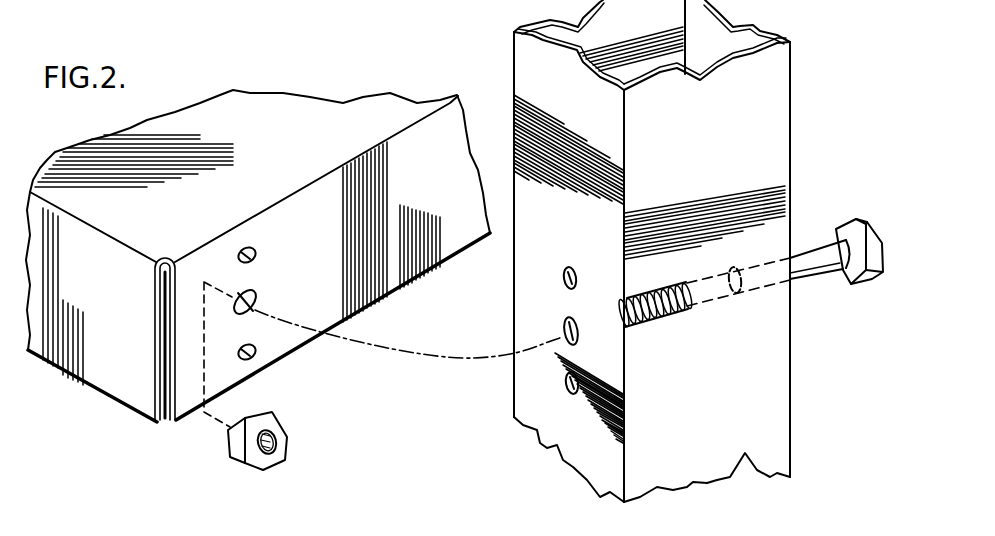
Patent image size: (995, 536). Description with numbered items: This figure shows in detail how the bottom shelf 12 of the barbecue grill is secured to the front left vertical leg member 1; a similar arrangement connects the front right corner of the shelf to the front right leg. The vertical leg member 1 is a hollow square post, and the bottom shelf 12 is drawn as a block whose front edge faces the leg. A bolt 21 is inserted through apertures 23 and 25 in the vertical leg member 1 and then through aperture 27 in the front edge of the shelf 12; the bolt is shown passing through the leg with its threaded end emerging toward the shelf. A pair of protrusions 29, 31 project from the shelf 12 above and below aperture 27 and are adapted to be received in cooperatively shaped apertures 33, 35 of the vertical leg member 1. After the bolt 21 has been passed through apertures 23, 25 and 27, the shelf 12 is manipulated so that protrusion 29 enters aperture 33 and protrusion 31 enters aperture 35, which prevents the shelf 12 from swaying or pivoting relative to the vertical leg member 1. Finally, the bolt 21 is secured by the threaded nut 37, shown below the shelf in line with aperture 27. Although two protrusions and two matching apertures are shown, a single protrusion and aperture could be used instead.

The vertical leg member 1 is at (773, 72).
The bottom shelf 12 is at (197, 117).
The bolt 21 is at (809, 250).
The aperture 23 is at (743, 289).
The aperture 25 is at (563, 341).
The aperture 27 is at (257, 294).
The protrusion 29 is at (257, 249).
The protrusion 31 is at (258, 349).
The aperture 33 is at (563, 277).
The aperture 35 is at (566, 394).
The threaded nut 37 is at (283, 441).